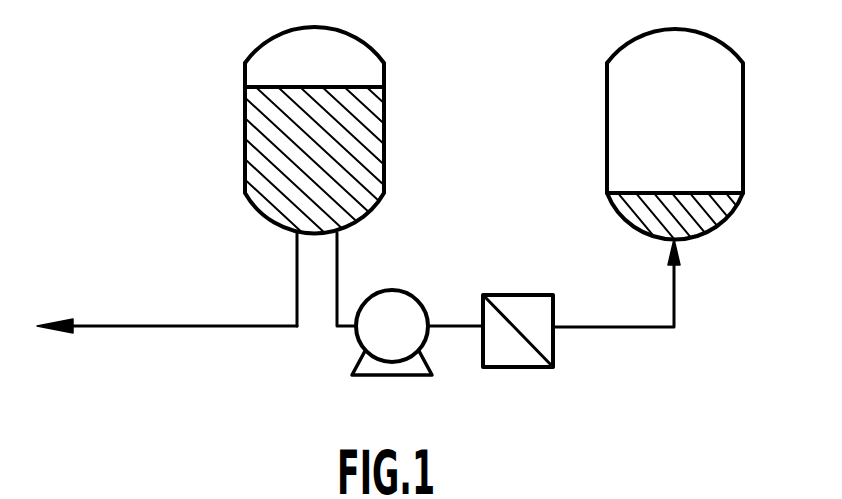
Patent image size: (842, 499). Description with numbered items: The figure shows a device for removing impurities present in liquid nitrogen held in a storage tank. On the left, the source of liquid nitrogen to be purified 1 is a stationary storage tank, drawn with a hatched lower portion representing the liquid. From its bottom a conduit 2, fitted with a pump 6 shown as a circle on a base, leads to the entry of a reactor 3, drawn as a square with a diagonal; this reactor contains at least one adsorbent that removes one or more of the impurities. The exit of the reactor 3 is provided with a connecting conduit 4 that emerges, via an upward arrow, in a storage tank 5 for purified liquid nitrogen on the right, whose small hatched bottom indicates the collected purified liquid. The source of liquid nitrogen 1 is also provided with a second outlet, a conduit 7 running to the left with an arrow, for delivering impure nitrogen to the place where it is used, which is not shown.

The source of liquid nitrogen to be purified 1 is at (384, 75).
The conduit 2 is at (337, 268).
The reactor 3 is at (531, 294).
The connecting conduit 4 is at (633, 326).
The storage tank for purified liquid nitrogen 5 is at (743, 145).
The pump 6 is at (410, 291).
The conduit 7 is at (186, 324).